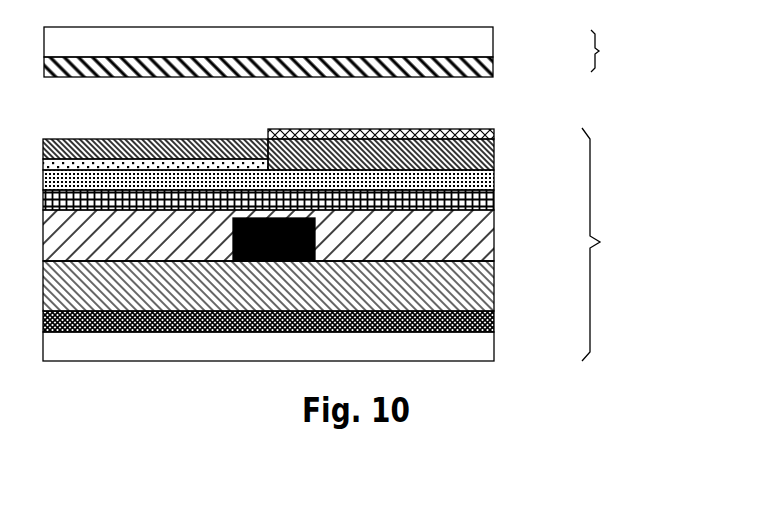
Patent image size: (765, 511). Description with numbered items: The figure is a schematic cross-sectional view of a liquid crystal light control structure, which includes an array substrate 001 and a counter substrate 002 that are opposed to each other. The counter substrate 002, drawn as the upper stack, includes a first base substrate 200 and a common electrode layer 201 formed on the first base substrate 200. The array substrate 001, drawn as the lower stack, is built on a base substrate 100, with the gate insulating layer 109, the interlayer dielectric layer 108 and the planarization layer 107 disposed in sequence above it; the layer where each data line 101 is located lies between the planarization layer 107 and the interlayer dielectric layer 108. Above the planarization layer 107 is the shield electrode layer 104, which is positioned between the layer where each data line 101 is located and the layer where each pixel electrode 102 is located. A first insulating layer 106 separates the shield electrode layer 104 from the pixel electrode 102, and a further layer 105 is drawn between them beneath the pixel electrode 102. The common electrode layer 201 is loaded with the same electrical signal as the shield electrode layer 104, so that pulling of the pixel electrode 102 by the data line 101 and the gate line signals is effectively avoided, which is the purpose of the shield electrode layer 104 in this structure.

The first base substrate 200 is at (493, 44).
The common electrode layer 201 is at (493, 69).
The counter substrate 002 is at (624, 51).
The pixel electrode 102 is at (494, 133).
The light emitting layer 105 is at (494, 158).
The first insulating layer 106 is at (494, 180).
The shield electrode layer 104 is at (494, 200).
The planarization layer 107 is at (494, 237).
The data line 101 is at (494, 262).
The interlayer dielectric layer 108 is at (494, 286).
The gate insulating layer 109 is at (494, 322).
The base substrate 100 is at (494, 347).
The array substrate 001 is at (622, 244).